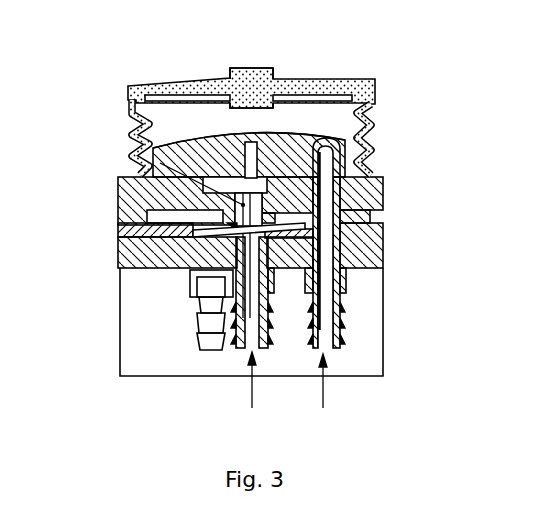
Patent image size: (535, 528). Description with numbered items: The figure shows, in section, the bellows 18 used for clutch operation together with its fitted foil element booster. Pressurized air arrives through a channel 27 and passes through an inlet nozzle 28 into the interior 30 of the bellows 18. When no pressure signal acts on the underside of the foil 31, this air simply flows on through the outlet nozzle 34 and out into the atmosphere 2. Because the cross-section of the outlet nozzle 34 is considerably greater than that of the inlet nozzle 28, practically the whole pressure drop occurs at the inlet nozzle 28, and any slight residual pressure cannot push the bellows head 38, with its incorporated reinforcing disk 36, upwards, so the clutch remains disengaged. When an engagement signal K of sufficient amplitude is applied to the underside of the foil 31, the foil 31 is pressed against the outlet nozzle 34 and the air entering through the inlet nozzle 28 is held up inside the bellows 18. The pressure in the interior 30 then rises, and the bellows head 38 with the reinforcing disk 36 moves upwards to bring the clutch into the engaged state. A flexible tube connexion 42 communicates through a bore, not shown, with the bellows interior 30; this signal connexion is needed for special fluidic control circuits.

The atmosphere 2 is at (250, 254).
The bellows 18 is at (373, 90).
The channel 27 is at (327, 332).
The inlet nozzle 28 is at (358, 143).
The interior 30 is at (308, 115).
The foil 31 is at (193, 231).
The outlet nozzle 34 is at (135, 145).
The reinforcing disk 36 is at (297, 97).
The bellows head 38 is at (242, 80).
The flexible tube connexion 42 is at (207, 325).
The engagement signal K is at (252, 395).